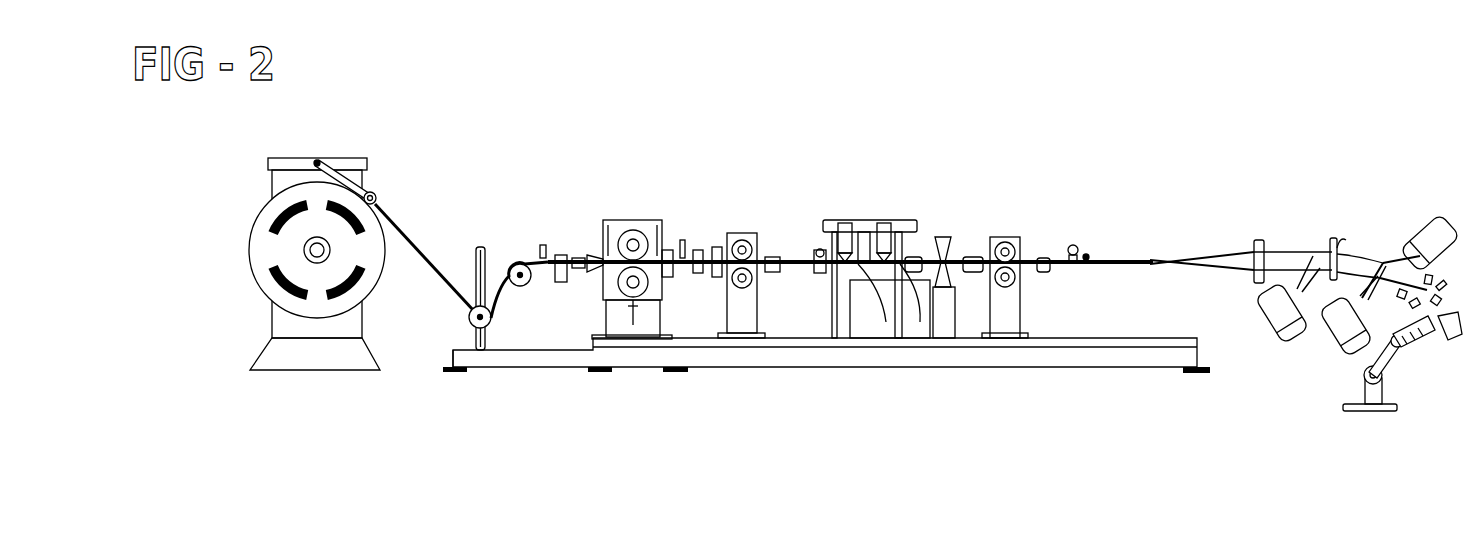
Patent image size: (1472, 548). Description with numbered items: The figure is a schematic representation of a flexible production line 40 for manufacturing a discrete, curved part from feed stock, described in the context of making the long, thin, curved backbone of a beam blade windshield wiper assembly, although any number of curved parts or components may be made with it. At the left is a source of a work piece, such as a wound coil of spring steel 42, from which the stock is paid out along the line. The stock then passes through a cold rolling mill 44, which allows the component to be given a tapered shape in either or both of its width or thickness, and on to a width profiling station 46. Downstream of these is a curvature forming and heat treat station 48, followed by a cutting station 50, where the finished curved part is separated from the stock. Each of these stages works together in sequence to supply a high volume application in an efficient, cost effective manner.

The flexible production line 40 is at (806, 182).
The source of a work piece 42 is at (202, 214).
The cold rolling mill 44 is at (627, 188).
The width profiling station 46 is at (915, 212).
The curvature forming and heat treat station 48 is at (1379, 221).
The cutting station 50 is at (1437, 359).